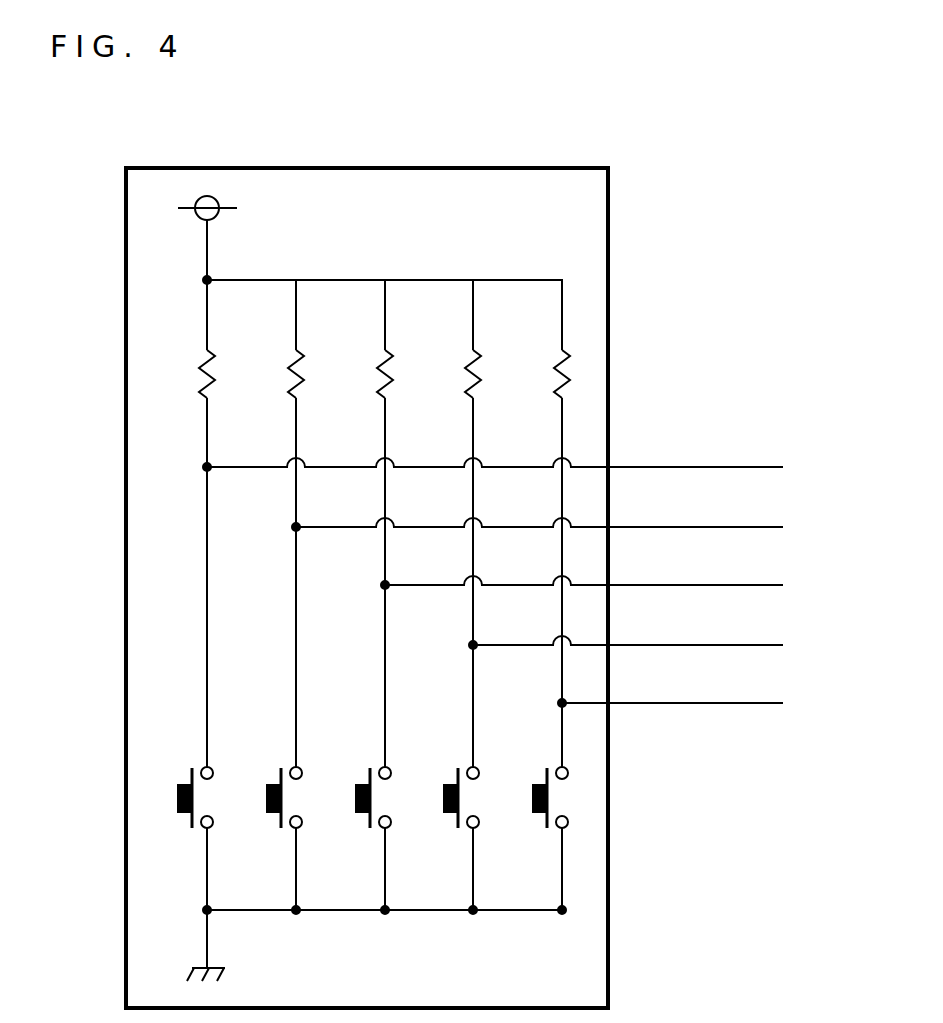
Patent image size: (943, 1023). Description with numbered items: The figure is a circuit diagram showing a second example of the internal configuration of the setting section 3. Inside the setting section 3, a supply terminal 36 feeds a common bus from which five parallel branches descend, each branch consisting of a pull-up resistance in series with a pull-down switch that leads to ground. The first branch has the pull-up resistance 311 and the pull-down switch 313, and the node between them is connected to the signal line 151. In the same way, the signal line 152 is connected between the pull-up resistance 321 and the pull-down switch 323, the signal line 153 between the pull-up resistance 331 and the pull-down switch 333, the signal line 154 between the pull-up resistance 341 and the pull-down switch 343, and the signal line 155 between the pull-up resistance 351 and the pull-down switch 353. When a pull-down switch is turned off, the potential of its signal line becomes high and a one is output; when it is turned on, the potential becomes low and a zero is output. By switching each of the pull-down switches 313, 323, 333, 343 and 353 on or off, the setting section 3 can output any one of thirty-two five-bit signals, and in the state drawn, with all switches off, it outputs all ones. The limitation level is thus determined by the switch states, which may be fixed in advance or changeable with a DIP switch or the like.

The setting section 3 is at (490, 168).
The power supply terminal 36 is at (221, 203).
The pull-up resistance 311 is at (198, 371).
The pull-up resistance 321 is at (287, 371).
The pull-up resistance 331 is at (376, 371).
The pull-up resistance 341 is at (464, 371).
The pull-up resistance 351 is at (553, 371).
The pull-down switch 313 is at (172, 797).
The pull-down switch 323 is at (261, 797).
The pull-down switch 333 is at (350, 797).
The pull-down switch 343 is at (438, 797).
The pull-down switch 353 is at (527, 797).
The signal line 151 is at (683, 467).
The signal line 152 is at (683, 527).
The signal line 153 is at (683, 585).
The signal line 154 is at (683, 645).
The signal line 155 is at (683, 703).